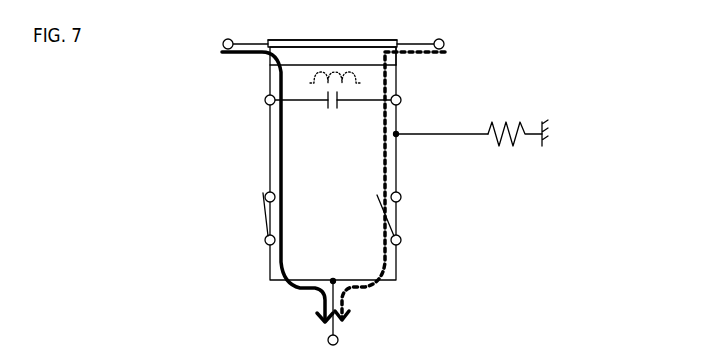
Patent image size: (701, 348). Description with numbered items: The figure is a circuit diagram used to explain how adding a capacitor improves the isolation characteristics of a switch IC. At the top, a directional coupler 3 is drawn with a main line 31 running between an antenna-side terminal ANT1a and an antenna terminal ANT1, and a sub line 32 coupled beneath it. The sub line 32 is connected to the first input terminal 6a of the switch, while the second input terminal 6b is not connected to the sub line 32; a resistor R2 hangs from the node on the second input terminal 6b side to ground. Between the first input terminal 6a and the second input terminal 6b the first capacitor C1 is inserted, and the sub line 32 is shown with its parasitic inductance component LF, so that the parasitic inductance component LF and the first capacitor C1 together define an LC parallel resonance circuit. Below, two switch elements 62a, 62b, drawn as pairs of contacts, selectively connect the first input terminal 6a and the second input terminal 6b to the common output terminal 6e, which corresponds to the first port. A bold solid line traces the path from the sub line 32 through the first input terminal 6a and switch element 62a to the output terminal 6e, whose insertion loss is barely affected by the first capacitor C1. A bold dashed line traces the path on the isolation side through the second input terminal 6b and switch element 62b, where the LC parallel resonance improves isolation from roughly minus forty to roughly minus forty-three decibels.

The first antenna terminal ANT1a is at (222, 43).
The antenna terminal ANT1 is at (445, 41).
The first conductor of antenna element 31 is at (288, 43).
The directional coupler 3 is at (314, 36).
The sub line 32 is at (376, 62).
The first input terminal 6a is at (265, 100).
The second input terminal 6b is at (401, 98).
The parasitic inductance component LF is at (322, 88).
The first capacitor C1 is at (336, 109).
The resistor R2 is at (471, 126).
The switch 62a is at (258, 218).
The switch 62b is at (400, 212).
The output terminal 6e is at (340, 341).